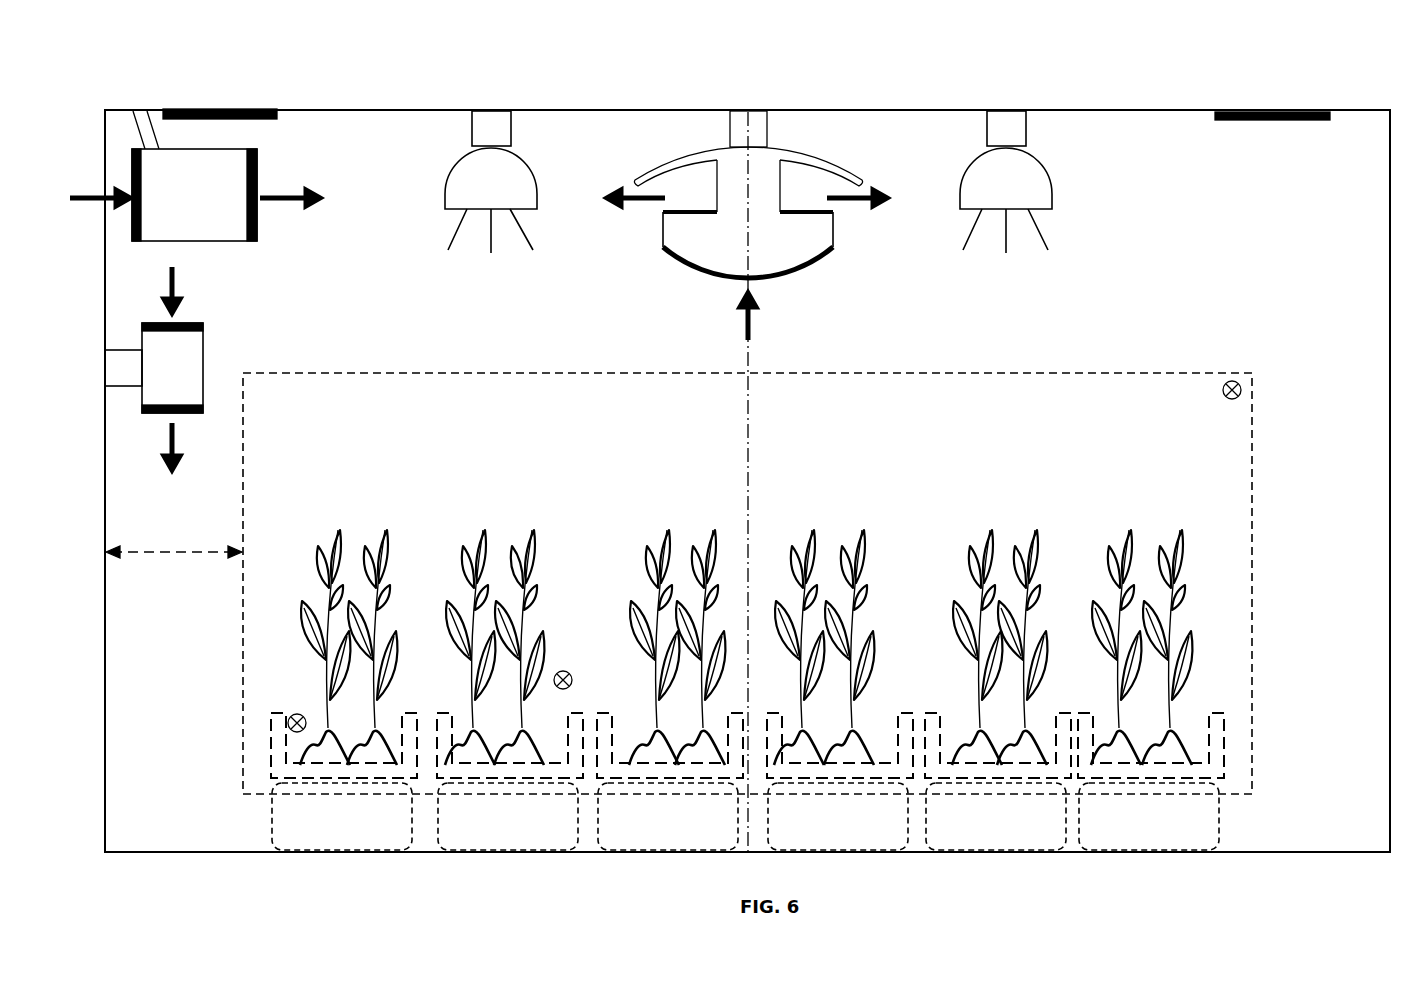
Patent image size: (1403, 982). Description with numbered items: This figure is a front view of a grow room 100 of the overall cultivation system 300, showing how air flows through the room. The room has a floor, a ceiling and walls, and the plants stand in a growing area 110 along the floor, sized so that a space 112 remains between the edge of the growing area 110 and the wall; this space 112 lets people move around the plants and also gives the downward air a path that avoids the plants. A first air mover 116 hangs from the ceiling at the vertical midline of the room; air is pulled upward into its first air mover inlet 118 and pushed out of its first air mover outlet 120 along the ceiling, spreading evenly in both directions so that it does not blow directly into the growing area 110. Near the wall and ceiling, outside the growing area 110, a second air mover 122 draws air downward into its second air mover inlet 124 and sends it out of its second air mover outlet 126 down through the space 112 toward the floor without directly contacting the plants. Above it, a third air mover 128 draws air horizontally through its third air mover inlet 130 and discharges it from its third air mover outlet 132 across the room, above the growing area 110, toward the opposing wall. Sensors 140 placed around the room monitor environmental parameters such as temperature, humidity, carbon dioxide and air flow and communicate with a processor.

The plant cultivation system 300 is at (300, 82).
The housing 100 is at (932, 110).
The growing area 110 is at (506, 394).
The space 112 is at (128, 555).
The first air mover 116 is at (712, 147).
The first air mover inlet 118 is at (827, 257).
The first air mover outlet 120 is at (810, 200).
The second air mover 122 is at (155, 366).
The second air mover inlet 124 is at (143, 415).
The second air mover outlet 126 is at (142, 328).
The third air mover 128 is at (192, 222).
The third air mover inlet 130 is at (132, 183).
The third air mover outlet 132 is at (259, 166).
The sensor 140 is at (292, 713).